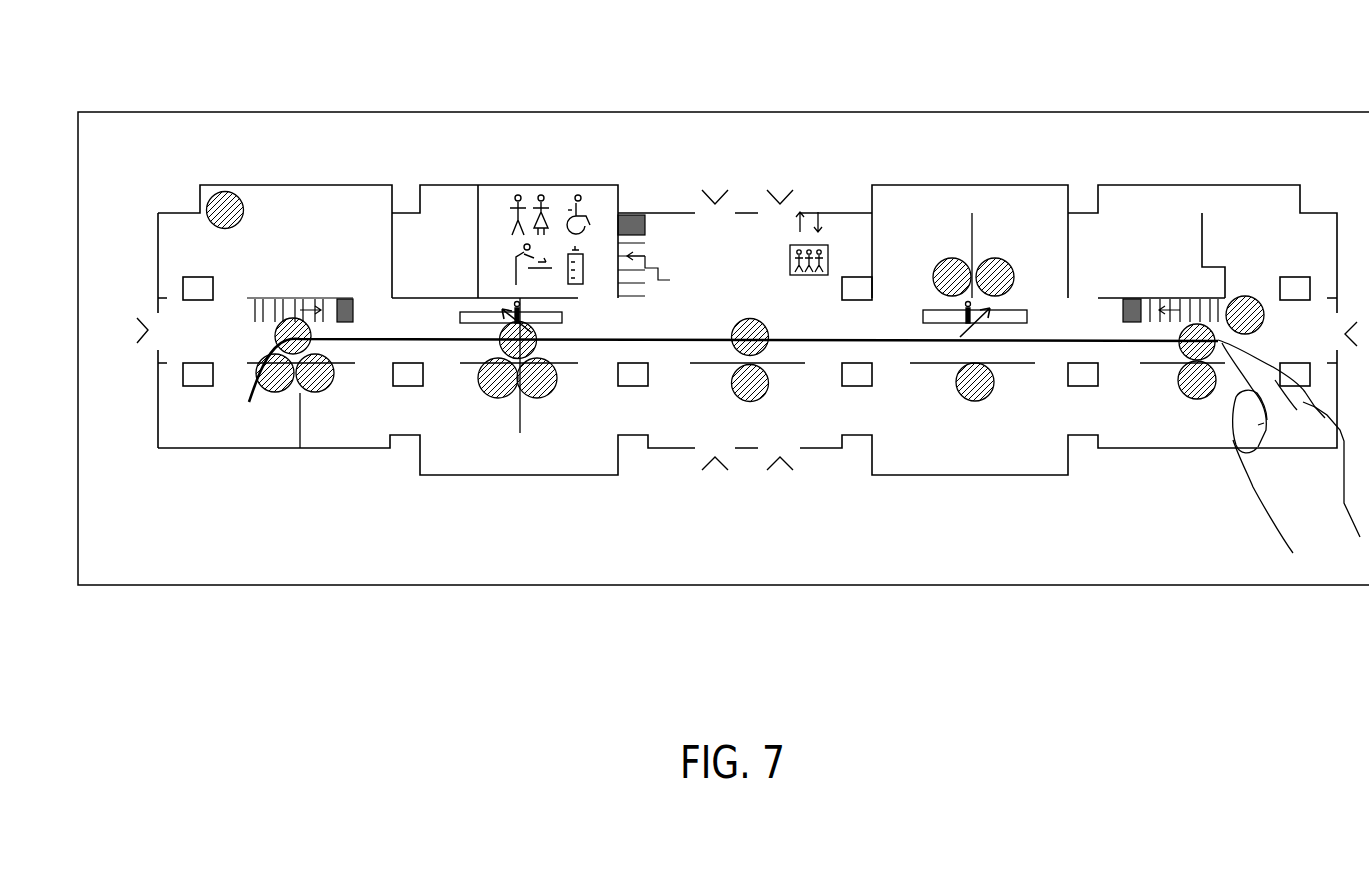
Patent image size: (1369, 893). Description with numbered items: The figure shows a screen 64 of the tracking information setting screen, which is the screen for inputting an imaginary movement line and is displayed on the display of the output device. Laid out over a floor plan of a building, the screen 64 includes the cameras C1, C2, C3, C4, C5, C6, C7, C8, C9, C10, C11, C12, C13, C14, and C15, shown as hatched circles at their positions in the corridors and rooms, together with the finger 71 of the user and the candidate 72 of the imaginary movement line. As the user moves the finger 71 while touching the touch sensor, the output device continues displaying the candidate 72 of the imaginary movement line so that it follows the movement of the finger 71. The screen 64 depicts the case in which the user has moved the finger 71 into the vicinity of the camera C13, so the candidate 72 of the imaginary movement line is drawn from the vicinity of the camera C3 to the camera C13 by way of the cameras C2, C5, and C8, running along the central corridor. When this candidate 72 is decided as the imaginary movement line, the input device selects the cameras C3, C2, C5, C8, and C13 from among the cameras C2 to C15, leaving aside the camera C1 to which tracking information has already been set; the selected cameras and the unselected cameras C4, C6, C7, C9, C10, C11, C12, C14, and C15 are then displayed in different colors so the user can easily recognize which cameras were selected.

The screen 64 is at (1267, 110).
The candidate of the imaginary movement line 72 is at (383, 340).
The finger 71 is at (1278, 520).
The camera C1 is at (233, 190).
The camera C2 is at (276, 334).
The camera C3 is at (272, 393).
The camera C4 is at (322, 393).
The camera C5 is at (499, 342).
The camera C6 is at (498, 398).
The camera C7 is at (537, 398).
The camera C8 is at (750, 318).
The camera C9 is at (750, 402).
The camera C10 is at (938, 258).
The camera C11 is at (1000, 257).
The camera C12 is at (968, 402).
The camera C13 is at (1179, 350).
The camera C14 is at (1243, 297).
The camera C15 is at (1208, 400).